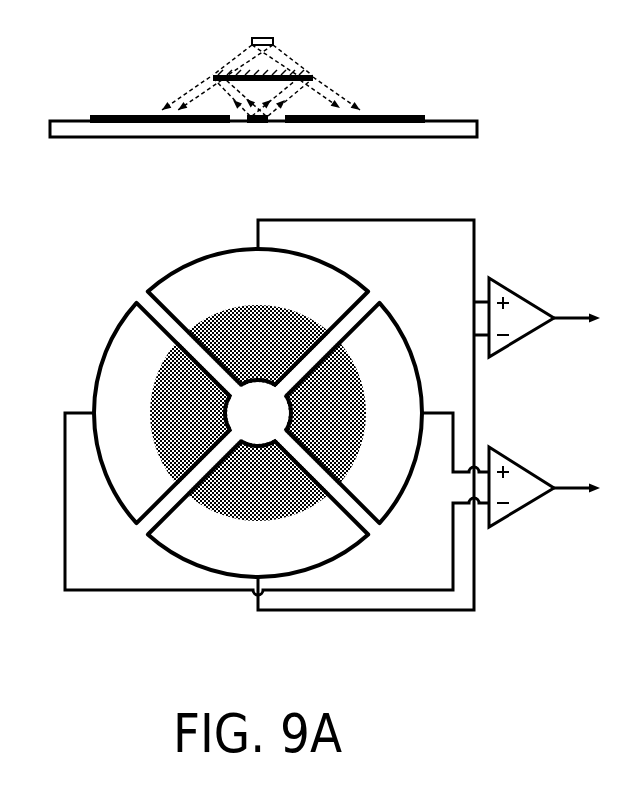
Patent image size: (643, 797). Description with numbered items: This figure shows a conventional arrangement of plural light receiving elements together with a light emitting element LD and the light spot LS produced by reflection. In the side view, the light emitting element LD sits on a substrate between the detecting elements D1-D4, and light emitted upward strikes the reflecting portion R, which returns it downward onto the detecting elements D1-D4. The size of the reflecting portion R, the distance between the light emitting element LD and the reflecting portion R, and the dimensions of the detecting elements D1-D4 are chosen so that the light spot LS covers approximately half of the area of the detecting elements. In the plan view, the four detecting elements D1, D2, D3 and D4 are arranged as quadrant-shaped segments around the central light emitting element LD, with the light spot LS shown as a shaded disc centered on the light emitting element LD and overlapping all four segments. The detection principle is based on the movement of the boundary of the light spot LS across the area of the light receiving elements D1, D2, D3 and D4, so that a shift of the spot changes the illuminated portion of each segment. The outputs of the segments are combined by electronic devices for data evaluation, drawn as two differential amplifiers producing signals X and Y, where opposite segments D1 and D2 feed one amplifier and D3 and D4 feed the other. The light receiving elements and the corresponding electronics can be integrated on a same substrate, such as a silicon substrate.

The reflecting portion R is at (213, 77).
The light emitting element LD is at (252, 123).
The detecting elements D1-D4 is at (257, 132).
The light spot LS is at (220, 328).
The detecting element D1 is at (258, 317).
The detecting element D2 is at (258, 509).
The detecting element D3 is at (162, 413).
The detecting element D4 is at (354, 413).
The X output signal (differential amplifier) X is at (549, 487).
The Y output signal (differential amplifier) Y is at (548, 317).